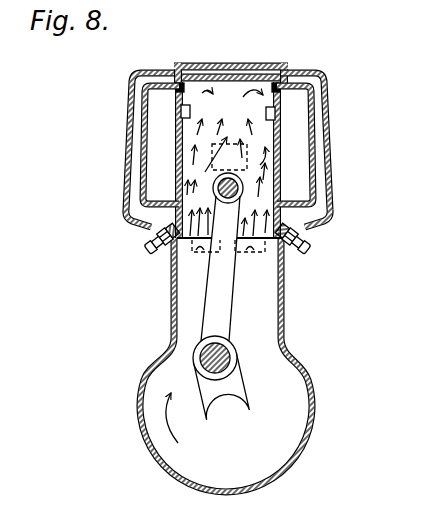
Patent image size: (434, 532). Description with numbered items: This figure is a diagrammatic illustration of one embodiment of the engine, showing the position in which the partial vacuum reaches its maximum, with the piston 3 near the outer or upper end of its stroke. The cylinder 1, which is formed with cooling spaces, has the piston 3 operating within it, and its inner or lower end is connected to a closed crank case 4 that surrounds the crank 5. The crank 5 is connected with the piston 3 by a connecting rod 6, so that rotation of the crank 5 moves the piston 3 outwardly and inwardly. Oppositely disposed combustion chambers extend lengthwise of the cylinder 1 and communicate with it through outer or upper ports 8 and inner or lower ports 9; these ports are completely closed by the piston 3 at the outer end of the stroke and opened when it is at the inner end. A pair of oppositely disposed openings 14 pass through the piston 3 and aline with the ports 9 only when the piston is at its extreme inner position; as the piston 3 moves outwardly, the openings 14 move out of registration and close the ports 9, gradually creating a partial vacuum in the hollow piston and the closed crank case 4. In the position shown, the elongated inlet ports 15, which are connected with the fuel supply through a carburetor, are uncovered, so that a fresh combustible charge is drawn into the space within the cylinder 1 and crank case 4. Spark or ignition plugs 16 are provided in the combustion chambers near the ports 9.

The cylinder 1 is at (250, 64).
The piston 3 is at (208, 73).
The crank case 4 is at (313, 390).
The crank 5 is at (237, 408).
The connecting rod 6 is at (222, 257).
The outer or upper ports 8 is at (292, 77).
The inner or lower ports 9 is at (292, 213).
The ports or openings 14 is at (263, 113).
The inlet ports 15 is at (285, 283).
The spark or ignition plugs 16 is at (146, 238).